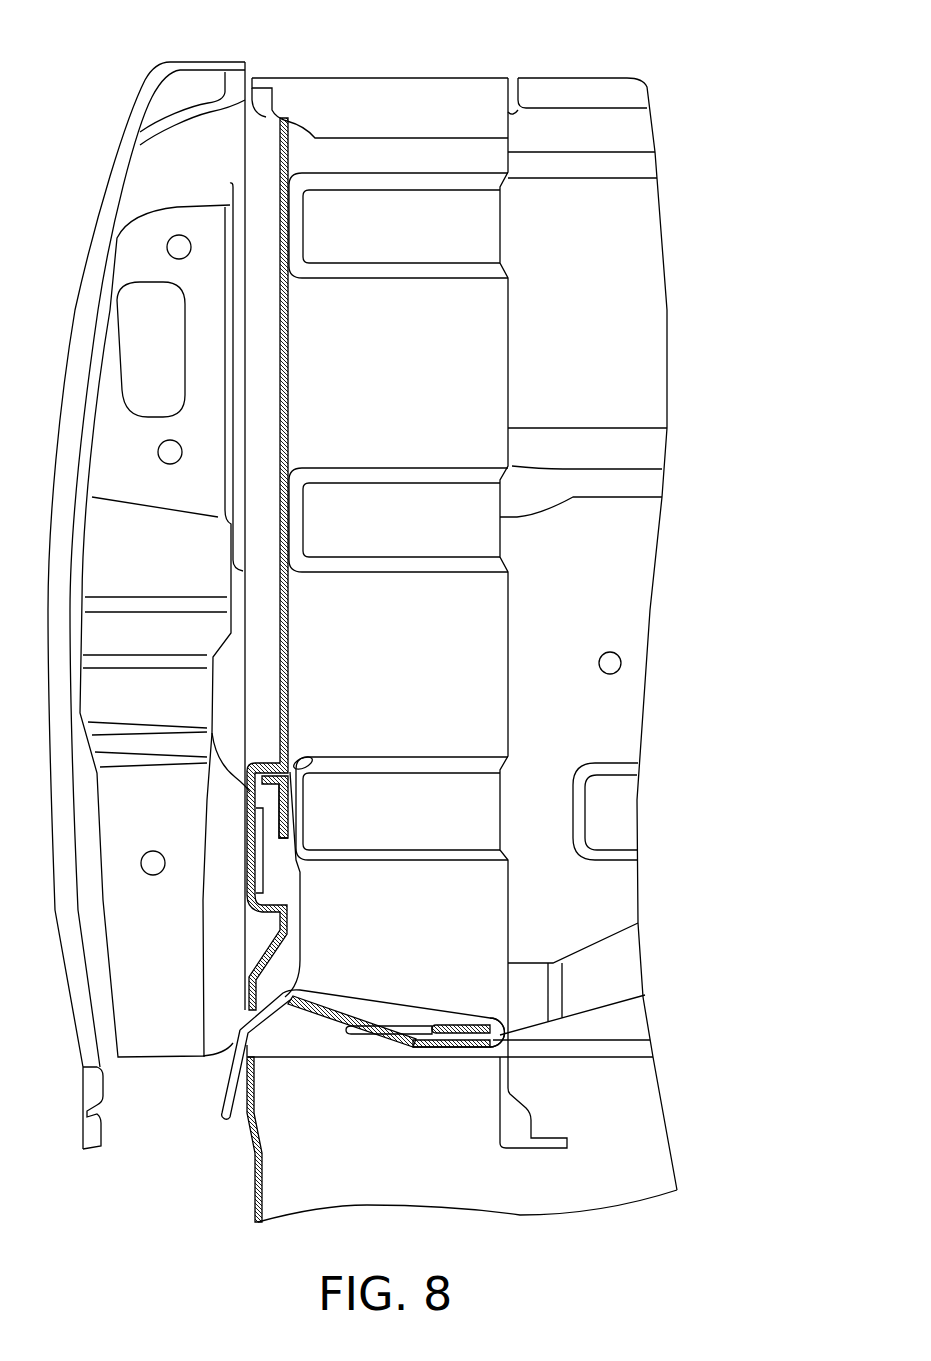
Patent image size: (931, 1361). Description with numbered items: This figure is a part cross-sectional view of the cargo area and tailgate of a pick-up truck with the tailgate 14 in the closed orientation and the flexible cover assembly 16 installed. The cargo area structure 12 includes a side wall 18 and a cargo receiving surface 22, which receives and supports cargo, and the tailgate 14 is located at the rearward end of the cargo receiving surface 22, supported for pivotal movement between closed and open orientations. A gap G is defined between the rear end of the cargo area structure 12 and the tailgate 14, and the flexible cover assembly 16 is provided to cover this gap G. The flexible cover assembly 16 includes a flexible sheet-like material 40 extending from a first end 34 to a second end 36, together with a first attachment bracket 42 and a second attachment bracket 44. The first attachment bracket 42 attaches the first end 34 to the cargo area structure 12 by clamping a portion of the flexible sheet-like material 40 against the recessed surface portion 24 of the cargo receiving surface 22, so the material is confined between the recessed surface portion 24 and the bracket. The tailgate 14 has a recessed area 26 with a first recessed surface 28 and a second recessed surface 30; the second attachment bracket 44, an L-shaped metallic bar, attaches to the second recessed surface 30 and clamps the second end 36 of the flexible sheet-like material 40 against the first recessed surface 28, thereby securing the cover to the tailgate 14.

The cargo area structure 12 is at (571, 80).
The tailgate 14 is at (108, 175).
The flexible cover assembly 16 is at (304, 913).
The side wall 18 is at (345, 78).
The cargo receiving surface 22 is at (604, 1005).
The recessed surface portion 24 is at (410, 1047).
The recessed area 26 is at (254, 866).
The first recessed surface 28 is at (312, 758).
The second recessed surface 30 is at (265, 848).
The first end 34 is at (503, 1032).
The second end 36 is at (282, 808).
The flexible sheet-like material 40 is at (387, 1006).
The first attachment bracket 42 is at (453, 1027).
The second attachment bracket 44 is at (277, 798).
The gap G is at (240, 1112).